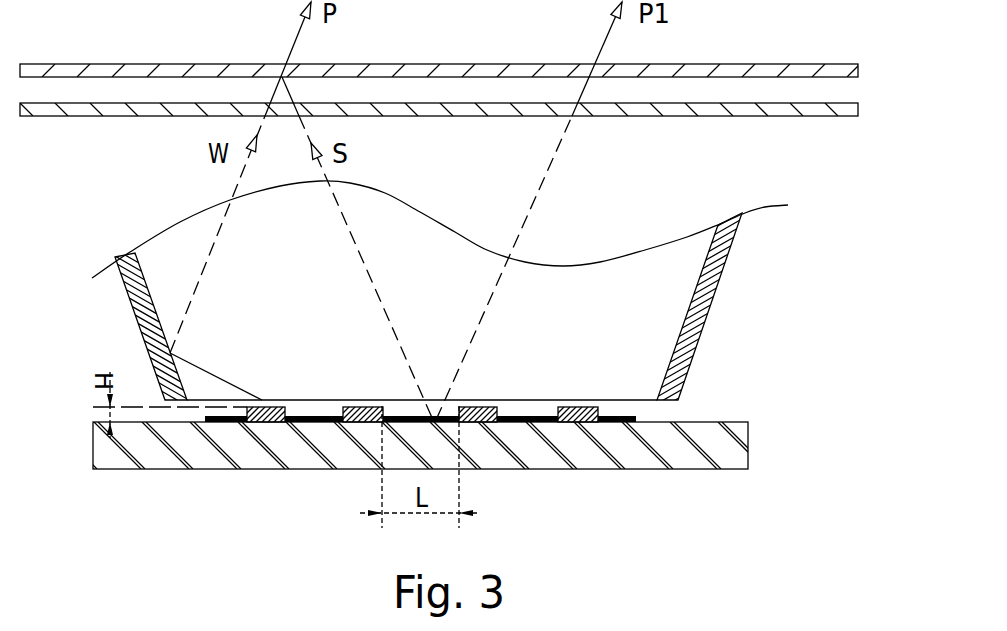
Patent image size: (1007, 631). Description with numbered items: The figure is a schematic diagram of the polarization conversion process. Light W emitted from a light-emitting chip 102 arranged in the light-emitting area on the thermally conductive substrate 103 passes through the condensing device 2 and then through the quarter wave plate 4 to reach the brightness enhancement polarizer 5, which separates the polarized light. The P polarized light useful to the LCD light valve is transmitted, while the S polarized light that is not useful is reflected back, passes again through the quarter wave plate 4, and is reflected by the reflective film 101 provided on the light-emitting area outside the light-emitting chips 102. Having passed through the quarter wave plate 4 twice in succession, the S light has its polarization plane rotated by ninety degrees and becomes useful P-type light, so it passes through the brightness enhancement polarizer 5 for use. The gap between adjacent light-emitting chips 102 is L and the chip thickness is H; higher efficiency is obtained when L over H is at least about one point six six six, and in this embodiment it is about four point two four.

The condensing device 2 is at (708, 278).
The quarter wave plate 4 is at (713, 111).
The brightness enhancement polarizer 5 is at (783, 72).
The reflective film 101 is at (530, 416).
The light-emitting chip 102 is at (362, 411).
The thermally conductive substrate 103 is at (742, 462).